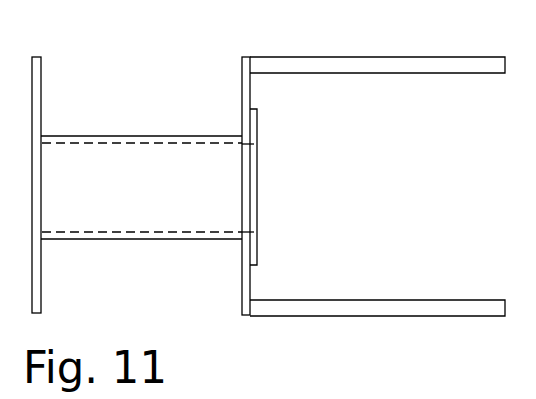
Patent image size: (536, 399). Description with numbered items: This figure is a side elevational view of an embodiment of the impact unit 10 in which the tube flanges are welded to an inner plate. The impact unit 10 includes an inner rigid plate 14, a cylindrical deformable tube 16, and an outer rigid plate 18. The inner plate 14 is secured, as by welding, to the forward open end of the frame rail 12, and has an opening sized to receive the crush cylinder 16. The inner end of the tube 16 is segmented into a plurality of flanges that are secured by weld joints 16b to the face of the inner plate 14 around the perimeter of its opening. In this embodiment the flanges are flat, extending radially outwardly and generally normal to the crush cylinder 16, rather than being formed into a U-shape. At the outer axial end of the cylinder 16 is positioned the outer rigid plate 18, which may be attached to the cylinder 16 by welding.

The display rack assembly 10 is at (145, 59).
The frame rail 12 is at (395, 65).
The inner rigid plate 14 is at (241, 289).
The cylindrical deformable tube 16 is at (117, 135).
The weld joints 16b is at (256, 122).
The outer rigid plate 18 is at (36, 300).